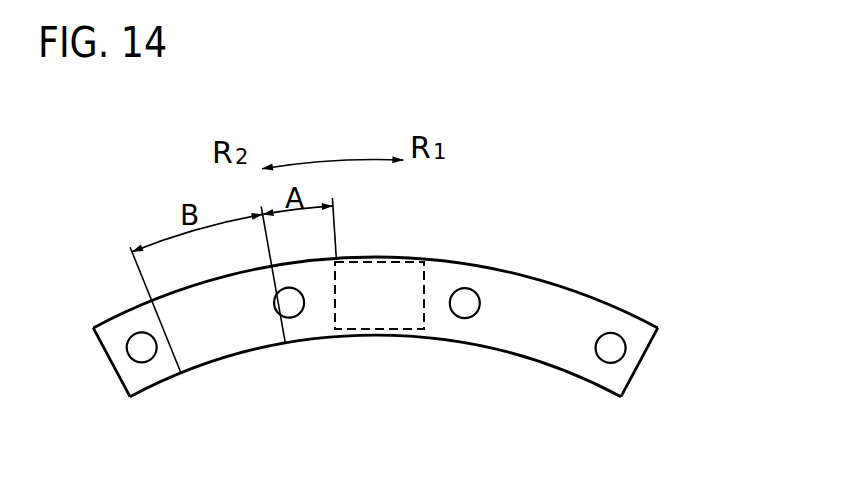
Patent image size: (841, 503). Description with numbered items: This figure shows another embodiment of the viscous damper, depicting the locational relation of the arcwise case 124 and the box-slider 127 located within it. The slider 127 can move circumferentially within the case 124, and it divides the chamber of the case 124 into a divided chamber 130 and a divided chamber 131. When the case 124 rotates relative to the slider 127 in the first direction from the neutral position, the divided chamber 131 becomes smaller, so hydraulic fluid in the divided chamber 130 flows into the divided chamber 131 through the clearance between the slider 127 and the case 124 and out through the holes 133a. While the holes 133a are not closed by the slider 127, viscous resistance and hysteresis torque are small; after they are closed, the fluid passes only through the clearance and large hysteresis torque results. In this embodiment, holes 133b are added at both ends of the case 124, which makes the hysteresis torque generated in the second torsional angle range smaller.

The case 124 is at (410, 329).
The slider 127 is at (410, 288).
The divided chamber 130 is at (238, 327).
The divided chamber 131 is at (540, 328).
The holes 133a is at (292, 318).
The holes 133b is at (144, 362).